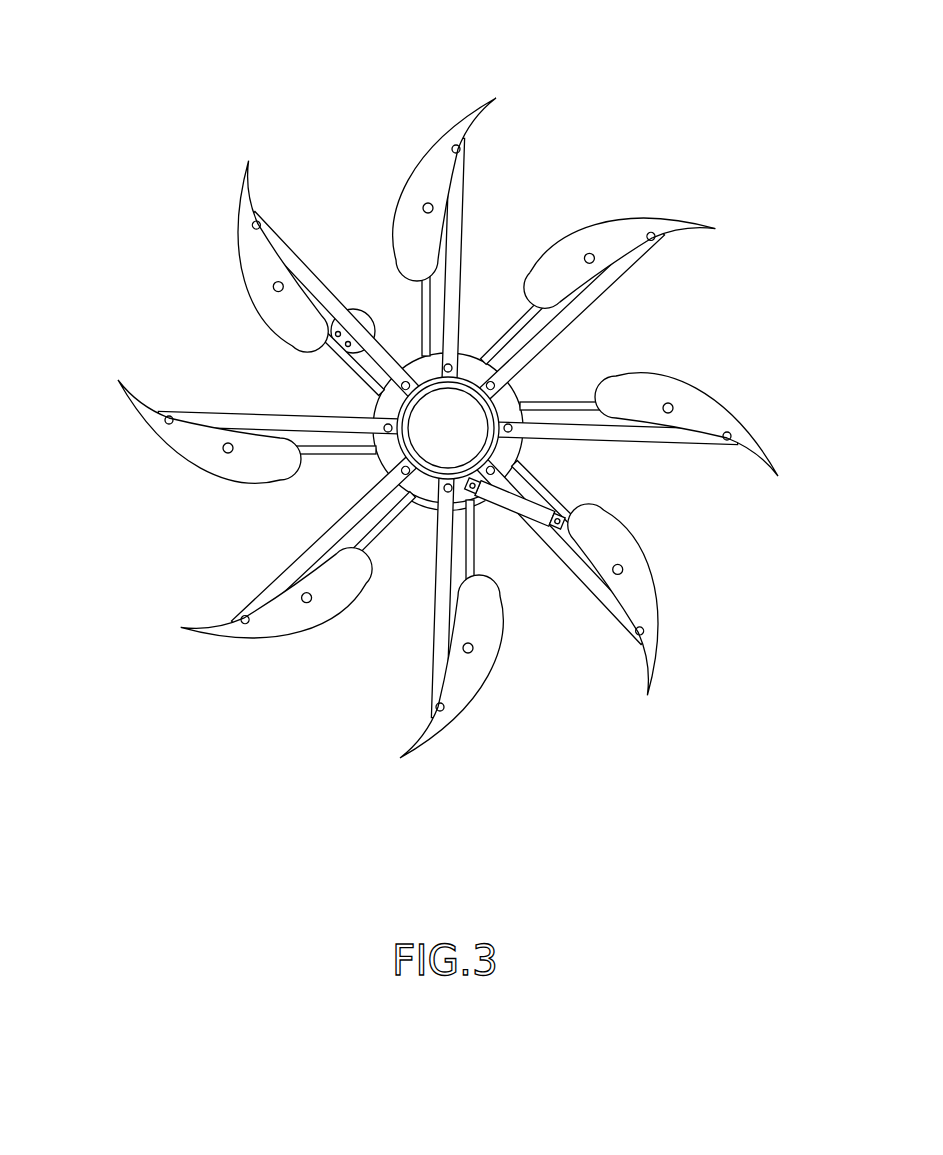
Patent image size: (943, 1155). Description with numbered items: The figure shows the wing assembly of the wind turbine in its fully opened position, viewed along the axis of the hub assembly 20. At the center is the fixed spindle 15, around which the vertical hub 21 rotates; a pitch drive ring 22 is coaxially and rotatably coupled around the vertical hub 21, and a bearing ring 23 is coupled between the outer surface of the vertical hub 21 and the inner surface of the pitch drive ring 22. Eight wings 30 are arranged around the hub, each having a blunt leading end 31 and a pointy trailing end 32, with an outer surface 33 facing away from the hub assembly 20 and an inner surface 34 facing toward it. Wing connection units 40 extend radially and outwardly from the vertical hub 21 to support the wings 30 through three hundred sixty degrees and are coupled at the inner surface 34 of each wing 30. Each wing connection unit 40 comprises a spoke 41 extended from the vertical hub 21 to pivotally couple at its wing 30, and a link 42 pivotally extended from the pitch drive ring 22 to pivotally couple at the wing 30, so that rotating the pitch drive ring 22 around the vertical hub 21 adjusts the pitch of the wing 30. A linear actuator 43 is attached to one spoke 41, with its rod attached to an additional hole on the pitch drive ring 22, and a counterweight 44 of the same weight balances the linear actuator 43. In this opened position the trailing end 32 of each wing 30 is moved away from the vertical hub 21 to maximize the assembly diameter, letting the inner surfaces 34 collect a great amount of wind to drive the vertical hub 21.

The fixed spindle 15 is at (428, 438).
The hub assembly 20 is at (451, 390).
The vertical hub 21 is at (520, 378).
The pitch drive ring 22 is at (520, 448).
The bearing ring 23 is at (435, 482).
The wing 30 is at (638, 207).
The blunt leading end 31 is at (515, 267).
The pointy trailing end 32 is at (750, 222).
The outer surface 33 is at (600, 197).
The inner surface 34 is at (666, 259).
The wing connection unit 40 is at (451, 390).
The spoke 41 is at (393, 250).
The link 42 is at (458, 192).
The linear actuator 43 is at (505, 502).
The counterweight 44 is at (368, 308).